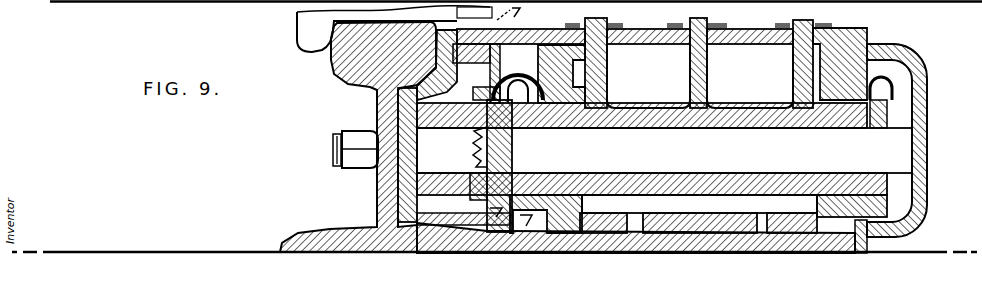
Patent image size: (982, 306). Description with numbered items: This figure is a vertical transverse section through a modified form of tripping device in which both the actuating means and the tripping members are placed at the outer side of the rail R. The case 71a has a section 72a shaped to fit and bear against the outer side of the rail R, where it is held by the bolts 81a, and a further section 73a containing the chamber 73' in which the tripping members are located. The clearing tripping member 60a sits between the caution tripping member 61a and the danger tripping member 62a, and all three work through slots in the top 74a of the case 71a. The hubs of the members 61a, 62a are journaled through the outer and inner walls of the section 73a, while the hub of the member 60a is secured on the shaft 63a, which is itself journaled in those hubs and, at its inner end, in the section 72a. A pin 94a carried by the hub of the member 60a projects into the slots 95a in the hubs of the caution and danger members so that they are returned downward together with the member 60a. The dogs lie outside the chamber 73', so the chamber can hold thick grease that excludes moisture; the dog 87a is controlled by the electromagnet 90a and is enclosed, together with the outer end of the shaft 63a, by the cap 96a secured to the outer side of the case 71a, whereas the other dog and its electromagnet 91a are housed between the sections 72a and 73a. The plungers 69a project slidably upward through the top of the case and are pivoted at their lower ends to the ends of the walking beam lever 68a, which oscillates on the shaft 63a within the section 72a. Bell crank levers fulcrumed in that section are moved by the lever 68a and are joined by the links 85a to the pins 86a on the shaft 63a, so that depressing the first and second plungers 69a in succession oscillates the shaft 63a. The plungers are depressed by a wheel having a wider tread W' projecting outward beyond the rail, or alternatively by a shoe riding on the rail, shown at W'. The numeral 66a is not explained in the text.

The wheel tread W' is at (361, 29).
The rail R is at (287, 235).
The bolt 81a is at (330, 147).
The case section 72a is at (370, 195).
The walking beam lever 68a is at (377, 108).
The plunger 69a is at (474, 12).
The case top 74a is at (747, 30).
The danger tripping member 62a is at (595, 25).
The clearing tripping member 60a is at (700, 22).
The caution tripping member 61a is at (806, 27).
The chamber 73' is at (648, 76).
The case 71a is at (878, 33).
The cap 96a is at (900, 60).
The electromagnet 90a is at (900, 90).
The dog 87a is at (897, 116).
The electromagnet 91a is at (517, 67).
The shaft 63a is at (664, 138).
The link 85a is at (463, 183).
The threaded portion 66a is at (540, 132).
The pin 86a is at (510, 170).
The slot 95a is at (592, 193).
The case section 73a is at (633, 233).
The pin 94a is at (700, 202).